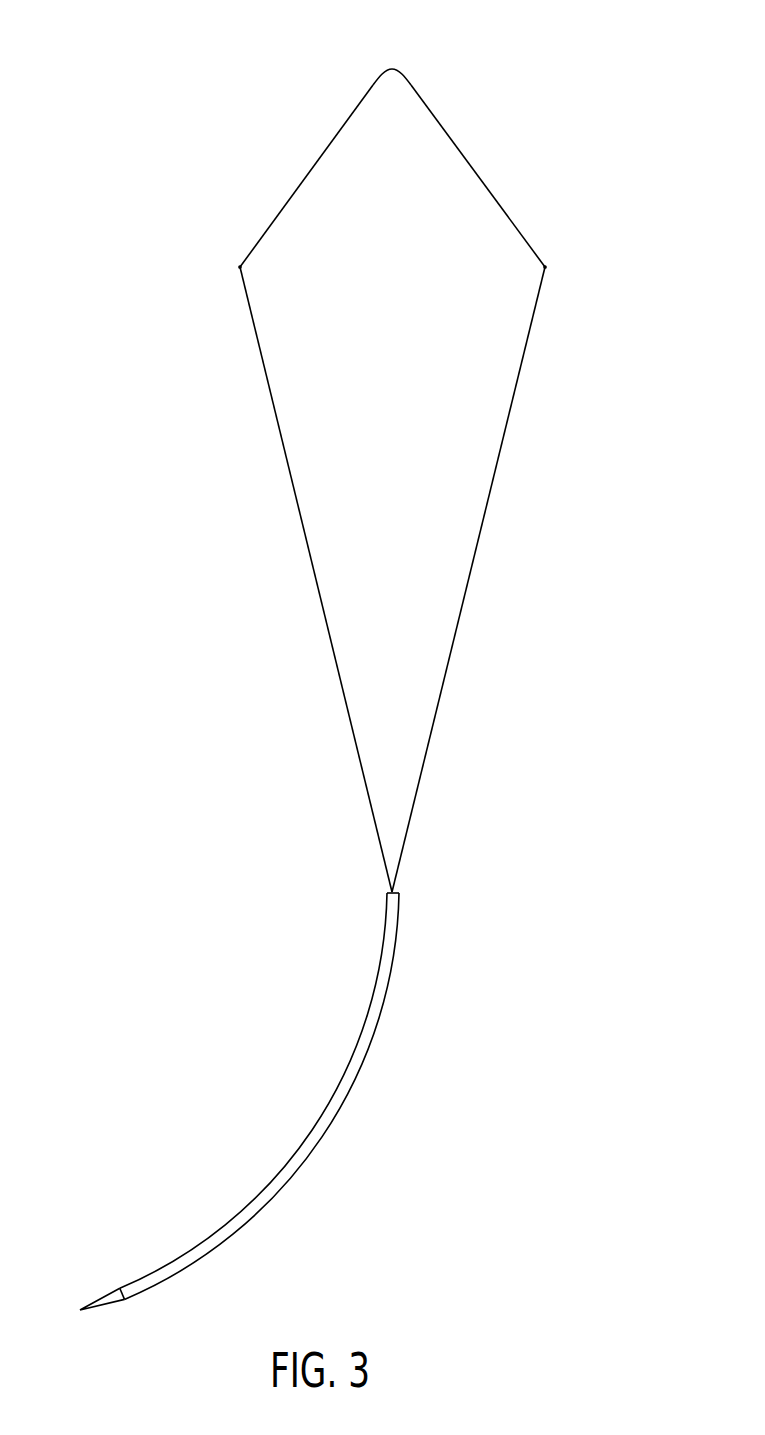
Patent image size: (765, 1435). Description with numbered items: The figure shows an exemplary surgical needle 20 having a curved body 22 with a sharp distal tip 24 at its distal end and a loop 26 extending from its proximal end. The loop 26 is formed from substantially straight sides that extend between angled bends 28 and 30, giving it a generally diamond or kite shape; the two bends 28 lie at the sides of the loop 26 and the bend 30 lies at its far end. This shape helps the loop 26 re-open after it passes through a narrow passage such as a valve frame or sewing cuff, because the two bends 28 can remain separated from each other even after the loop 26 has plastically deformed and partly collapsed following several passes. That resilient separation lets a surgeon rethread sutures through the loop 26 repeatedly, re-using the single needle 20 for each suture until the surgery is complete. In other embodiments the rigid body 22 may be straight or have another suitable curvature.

The needle 20 is at (104, 126).
The curved body 22 is at (343, 1092).
The sharp distal tip 24 is at (110, 1303).
The loop 26 is at (500, 457).
The angled bends 28 is at (240, 267).
The angled bend 30 is at (393, 69).